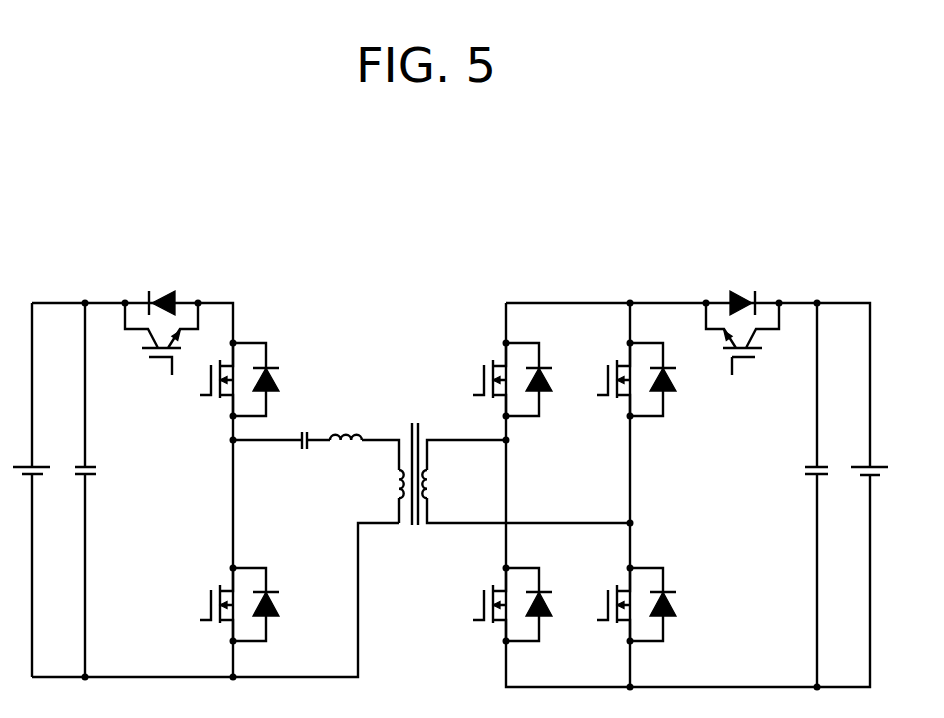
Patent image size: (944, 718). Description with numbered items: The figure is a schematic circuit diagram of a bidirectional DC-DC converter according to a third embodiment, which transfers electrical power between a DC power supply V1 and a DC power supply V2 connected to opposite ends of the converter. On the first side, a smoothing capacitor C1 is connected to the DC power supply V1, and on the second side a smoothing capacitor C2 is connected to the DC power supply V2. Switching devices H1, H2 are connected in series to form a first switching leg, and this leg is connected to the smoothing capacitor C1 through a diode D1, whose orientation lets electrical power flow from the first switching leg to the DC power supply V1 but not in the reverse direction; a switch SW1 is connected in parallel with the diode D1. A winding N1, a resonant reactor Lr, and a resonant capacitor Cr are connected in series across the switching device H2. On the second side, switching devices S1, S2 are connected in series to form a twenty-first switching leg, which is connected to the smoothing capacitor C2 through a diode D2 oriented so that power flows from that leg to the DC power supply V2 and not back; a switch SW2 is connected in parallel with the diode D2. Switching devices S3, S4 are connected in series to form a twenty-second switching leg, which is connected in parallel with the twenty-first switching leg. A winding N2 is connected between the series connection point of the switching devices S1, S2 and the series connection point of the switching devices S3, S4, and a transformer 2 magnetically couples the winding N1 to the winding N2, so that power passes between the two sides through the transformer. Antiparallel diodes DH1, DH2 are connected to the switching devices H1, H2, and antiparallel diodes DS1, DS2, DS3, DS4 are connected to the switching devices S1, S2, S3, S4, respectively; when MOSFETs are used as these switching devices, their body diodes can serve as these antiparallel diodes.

The diode D1 is at (162, 298).
The switch SW1 is at (157, 363).
The switching device H1 is at (213, 398).
The antiparallel diode DH1 is at (276, 383).
The switching device H2 is at (214, 624).
The antiparallel diode DH2 is at (276, 608).
The resonant capacitor Cr is at (305, 431).
The resonant reactor Lr is at (347, 432).
The transformer 2 is at (414, 421).
The winding N1 is at (397, 490).
The winding N2 is at (429, 490).
The switching device S1 is at (487, 399).
The antiparallel diode DS1 is at (546, 386).
The switching device S2 is at (488, 625).
The antiparallel diode DS2 is at (546, 610).
The switching device S3 is at (612, 399).
The antiparallel diode DS3 is at (668, 393).
The switching device S4 is at (612, 625).
The antiparallel diode DS4 is at (677, 603).
The diode D2 is at (749, 297).
The switch SW2 is at (745, 361).
The smoothing capacitor C2 is at (812, 466).
The DC power supply V2 is at (862, 466).
The DC power supply V1 is at (38, 466).
The smoothing capacitor C1 is at (91, 466).